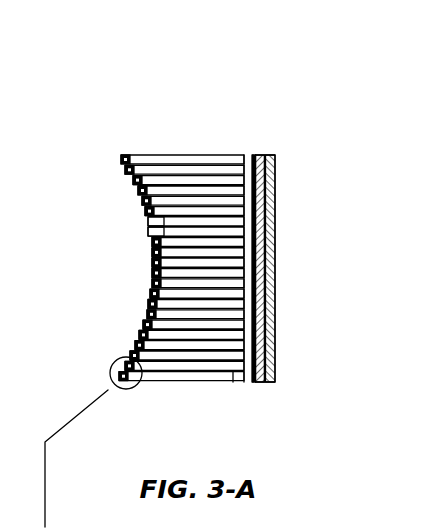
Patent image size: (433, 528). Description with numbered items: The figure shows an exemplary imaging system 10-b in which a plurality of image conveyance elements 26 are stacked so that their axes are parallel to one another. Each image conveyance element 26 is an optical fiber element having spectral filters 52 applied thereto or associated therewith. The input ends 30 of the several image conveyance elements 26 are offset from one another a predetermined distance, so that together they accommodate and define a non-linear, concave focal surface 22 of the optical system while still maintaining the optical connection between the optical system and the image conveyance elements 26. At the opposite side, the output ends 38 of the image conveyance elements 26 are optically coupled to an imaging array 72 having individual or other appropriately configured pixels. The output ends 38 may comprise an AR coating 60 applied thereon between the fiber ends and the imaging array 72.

The imaging system 10-b is at (277, 83).
The input ends 30 is at (147, 152).
The image conveyance elements 26 is at (227, 152).
The concave focal surface 22 is at (118, 188).
The spectral filters 52 is at (148, 328).
The output ends 38 is at (233, 380).
The AR coating 60 is at (252, 385).
The imaging array 72 is at (276, 184).